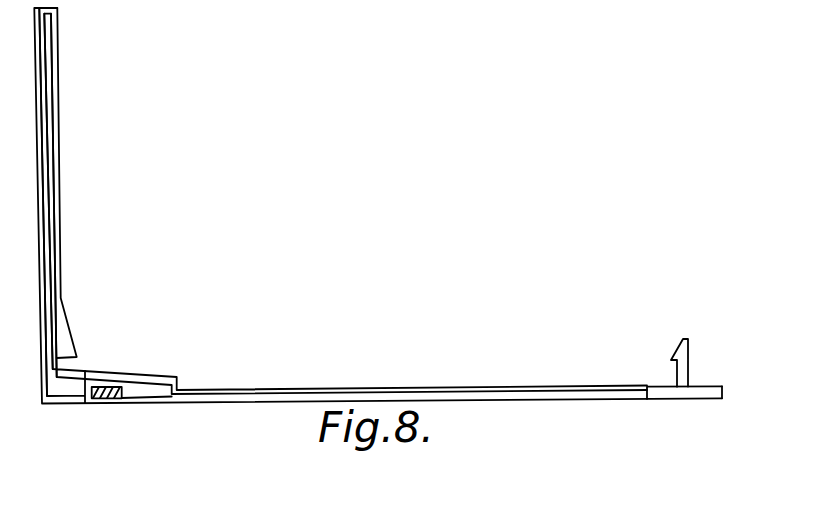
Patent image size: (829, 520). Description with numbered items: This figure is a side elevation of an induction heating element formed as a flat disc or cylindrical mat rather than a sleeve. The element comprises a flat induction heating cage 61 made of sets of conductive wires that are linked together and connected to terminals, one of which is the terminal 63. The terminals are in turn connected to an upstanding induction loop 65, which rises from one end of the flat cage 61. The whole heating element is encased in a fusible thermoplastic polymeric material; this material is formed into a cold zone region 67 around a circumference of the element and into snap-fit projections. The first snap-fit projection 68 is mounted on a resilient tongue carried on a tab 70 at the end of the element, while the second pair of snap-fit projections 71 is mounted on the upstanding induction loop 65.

The flat induction heating cage 61 is at (511, 394).
The terminal 63 is at (110, 400).
The upstanding induction loop 65 is at (46, 119).
The cold zone region 67 is at (642, 400).
The first snap-fit projection 68 is at (697, 360).
The tab 70 is at (712, 392).
The second pair of snap-fit projections 71 is at (61, 351).